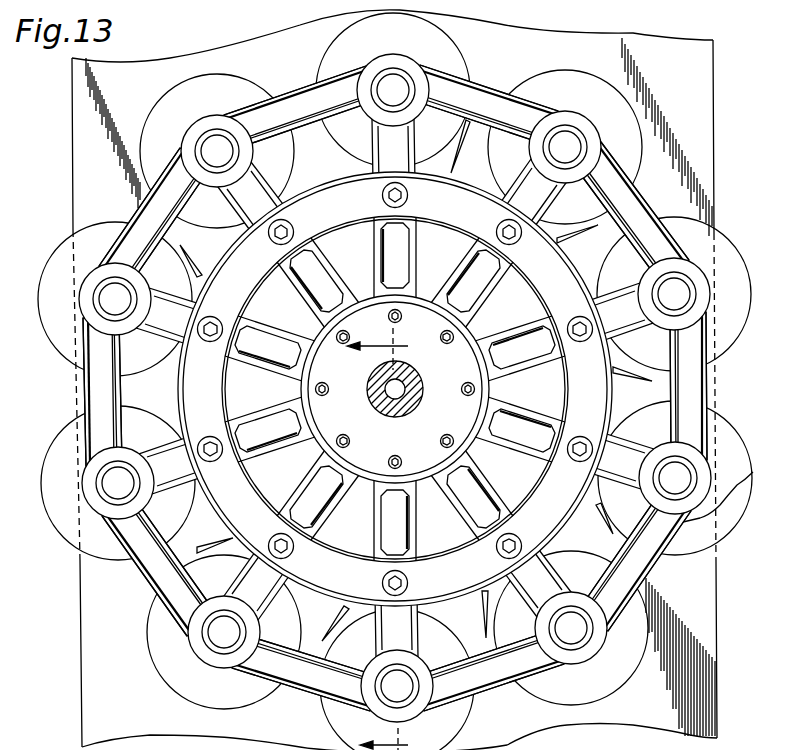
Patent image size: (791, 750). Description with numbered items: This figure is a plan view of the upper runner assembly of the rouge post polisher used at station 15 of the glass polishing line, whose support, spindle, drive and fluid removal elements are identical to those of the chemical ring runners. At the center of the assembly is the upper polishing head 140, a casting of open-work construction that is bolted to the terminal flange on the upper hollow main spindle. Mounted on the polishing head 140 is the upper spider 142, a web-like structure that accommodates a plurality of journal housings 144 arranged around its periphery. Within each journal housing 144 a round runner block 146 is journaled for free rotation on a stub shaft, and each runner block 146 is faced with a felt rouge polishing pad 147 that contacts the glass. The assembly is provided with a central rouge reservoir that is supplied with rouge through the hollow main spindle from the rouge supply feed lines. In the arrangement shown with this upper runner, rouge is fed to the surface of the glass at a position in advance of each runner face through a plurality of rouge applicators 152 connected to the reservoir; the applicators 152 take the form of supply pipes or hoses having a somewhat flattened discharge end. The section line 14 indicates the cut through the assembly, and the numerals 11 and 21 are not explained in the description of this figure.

The mounting plate 11 is at (90, 612).
The section line 14- 14 is at (392, 539).
The station 15 is at (68, 405).
The central shaft 21 is at (424, 392).
The upper polishing head 140 is at (567, 503).
The upper spider 142 is at (143, 577).
The journal housing 144 is at (208, 123).
The runner block 146 is at (57, 340).
The felt rouge polishing pad 147 is at (730, 522).
The rouge applicator 152 is at (212, 548).